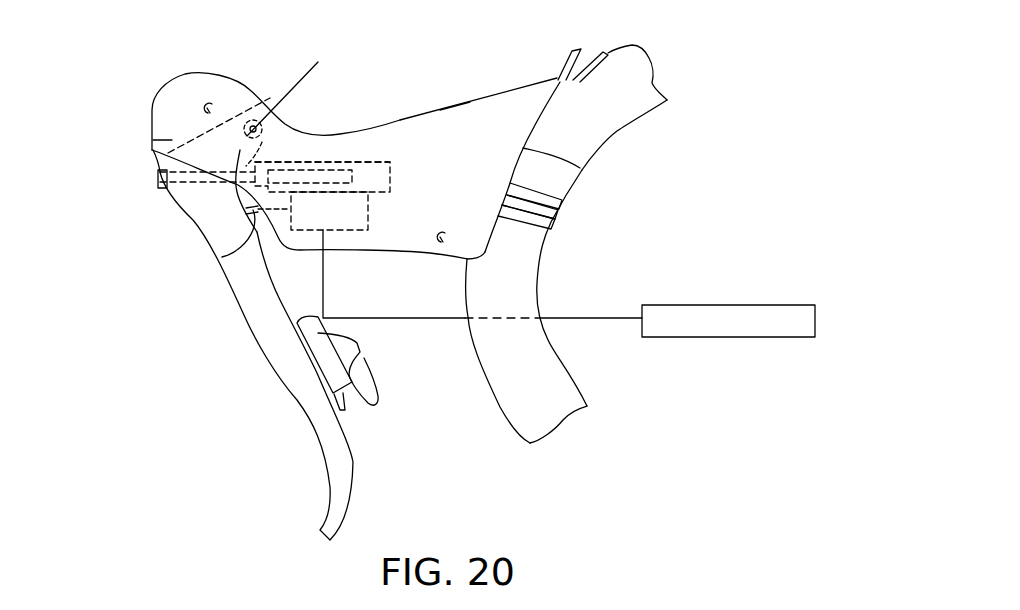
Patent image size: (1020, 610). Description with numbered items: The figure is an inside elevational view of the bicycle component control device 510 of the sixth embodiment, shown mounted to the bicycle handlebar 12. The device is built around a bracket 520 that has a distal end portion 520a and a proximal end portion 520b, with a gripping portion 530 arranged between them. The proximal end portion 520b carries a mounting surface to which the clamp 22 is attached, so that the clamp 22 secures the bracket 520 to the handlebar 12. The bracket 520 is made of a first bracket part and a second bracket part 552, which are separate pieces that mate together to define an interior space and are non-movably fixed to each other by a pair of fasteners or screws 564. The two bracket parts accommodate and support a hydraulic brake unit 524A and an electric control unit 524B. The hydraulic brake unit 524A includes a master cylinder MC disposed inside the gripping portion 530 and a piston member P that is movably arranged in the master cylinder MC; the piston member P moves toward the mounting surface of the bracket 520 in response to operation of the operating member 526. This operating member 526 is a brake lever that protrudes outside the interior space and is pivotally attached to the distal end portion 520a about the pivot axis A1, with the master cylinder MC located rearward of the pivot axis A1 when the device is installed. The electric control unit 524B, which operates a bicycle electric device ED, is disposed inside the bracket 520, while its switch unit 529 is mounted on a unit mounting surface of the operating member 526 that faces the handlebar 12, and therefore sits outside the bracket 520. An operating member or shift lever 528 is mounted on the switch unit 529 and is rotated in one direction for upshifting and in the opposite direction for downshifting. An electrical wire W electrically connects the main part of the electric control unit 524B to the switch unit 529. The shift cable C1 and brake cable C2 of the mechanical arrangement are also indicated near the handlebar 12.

The bicycle component control device 510 is at (152, 67).
The bracket 520 is at (153, 148).
The distal end portion 520a is at (242, 100).
The proximal end portion 520b is at (580, 170).
The fasteners 564 is at (212, 100).
The pivot axis A1 is at (297, 91).
The hydraulic brake unit 524A is at (322, 149).
The electric control unit 524B is at (360, 233).
The piston member P is at (330, 167).
The master cylinder MC is at (395, 163).
The gripping portion 530 is at (418, 133).
The second bracket part 552 is at (458, 123).
The shift cable C1 is at (594, 52).
The brake cable C2 is at (570, 60).
The bicycle handlebar 12 is at (622, 128).
The clamp 22 is at (568, 207).
The electrical wire W is at (222, 257).
The operating member 526 is at (243, 313).
The operating member 528 is at (368, 345).
The switch unit 529 is at (327, 367).
The bicycle electric device ED is at (702, 305).